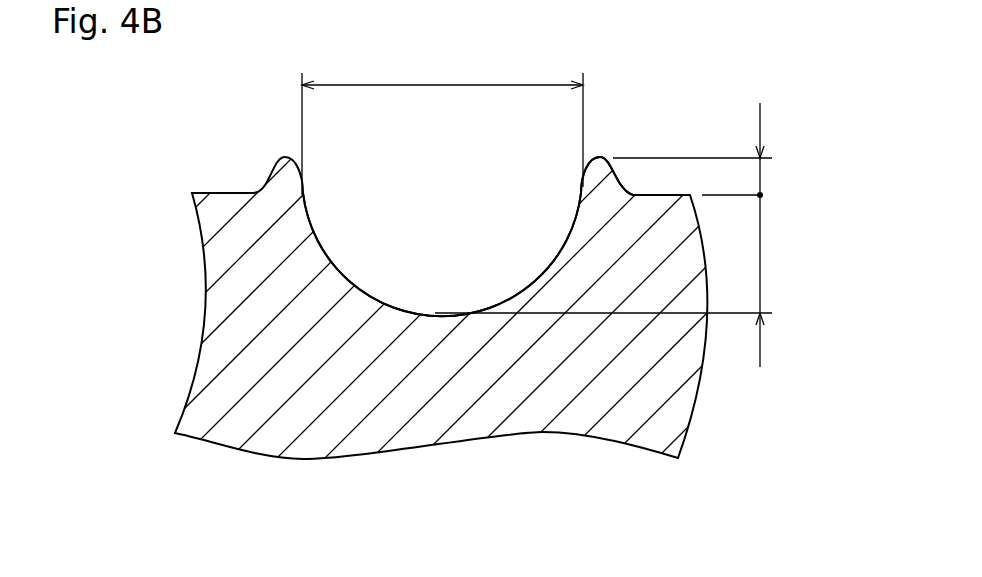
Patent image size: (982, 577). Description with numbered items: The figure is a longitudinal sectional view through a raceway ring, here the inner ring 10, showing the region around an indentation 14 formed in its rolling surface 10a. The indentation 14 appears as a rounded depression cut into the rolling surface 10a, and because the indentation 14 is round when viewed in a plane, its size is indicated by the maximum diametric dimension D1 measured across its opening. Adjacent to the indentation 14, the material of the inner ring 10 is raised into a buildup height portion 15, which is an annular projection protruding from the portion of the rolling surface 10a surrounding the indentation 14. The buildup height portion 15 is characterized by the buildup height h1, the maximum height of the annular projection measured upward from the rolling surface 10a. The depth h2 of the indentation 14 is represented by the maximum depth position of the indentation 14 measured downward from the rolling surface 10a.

The inner ring 10 is at (306, 440).
The rolling surface 10a is at (222, 192).
The indentation 14 is at (434, 312).
The buildup height portion 15 is at (598, 171).
The maximum diametric dimension D1 is at (424, 85).
The buildup height h1 is at (762, 170).
The depth h2 is at (762, 260).